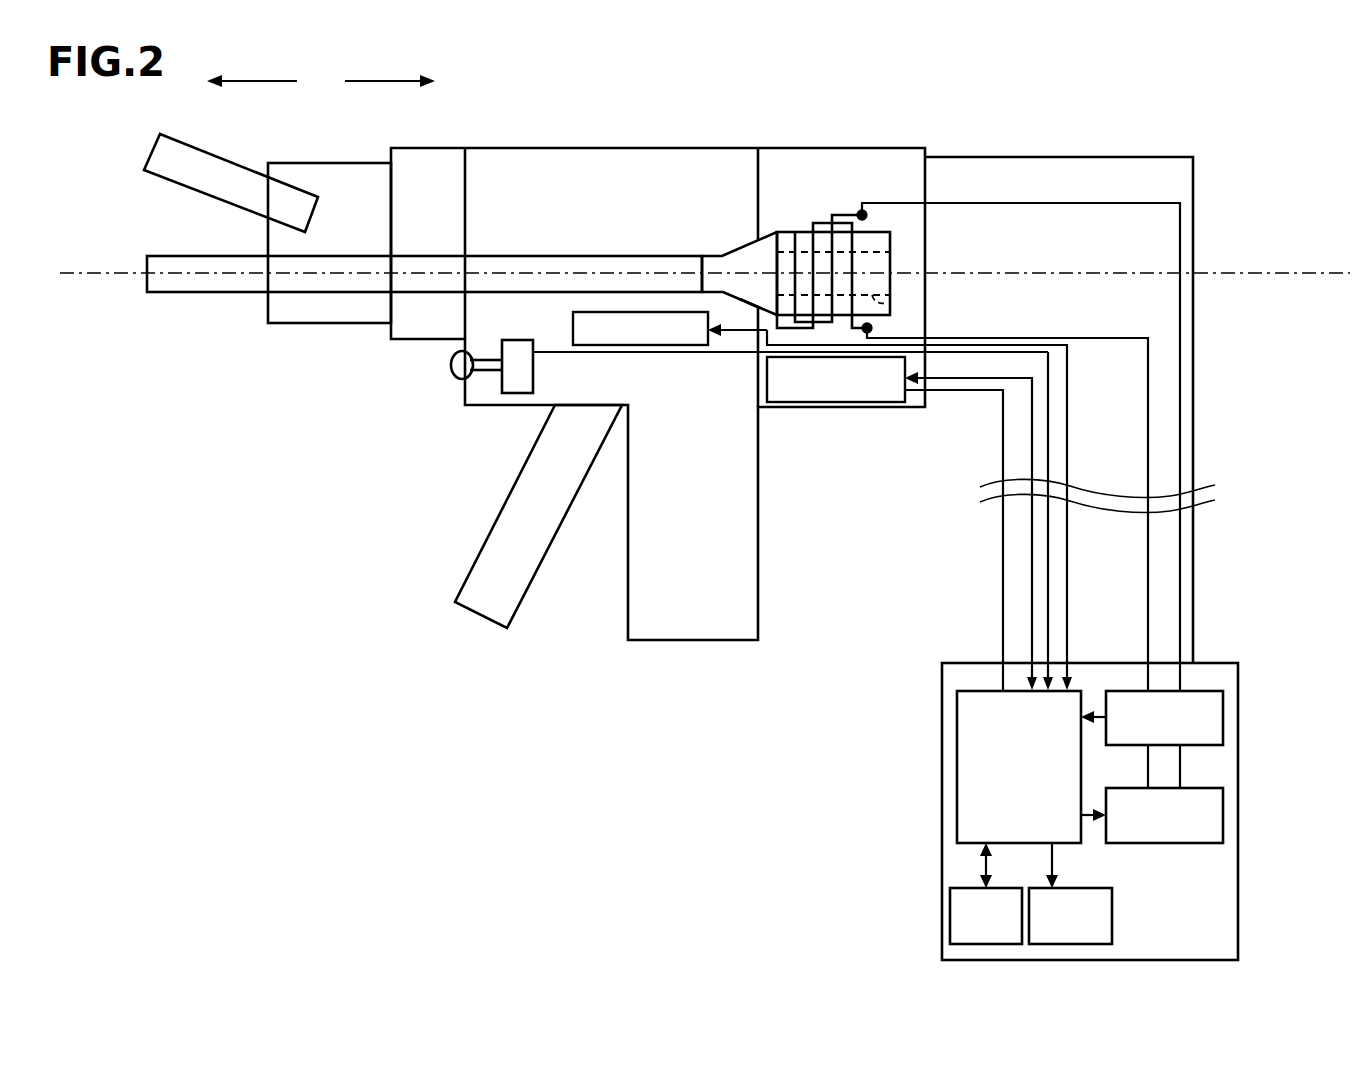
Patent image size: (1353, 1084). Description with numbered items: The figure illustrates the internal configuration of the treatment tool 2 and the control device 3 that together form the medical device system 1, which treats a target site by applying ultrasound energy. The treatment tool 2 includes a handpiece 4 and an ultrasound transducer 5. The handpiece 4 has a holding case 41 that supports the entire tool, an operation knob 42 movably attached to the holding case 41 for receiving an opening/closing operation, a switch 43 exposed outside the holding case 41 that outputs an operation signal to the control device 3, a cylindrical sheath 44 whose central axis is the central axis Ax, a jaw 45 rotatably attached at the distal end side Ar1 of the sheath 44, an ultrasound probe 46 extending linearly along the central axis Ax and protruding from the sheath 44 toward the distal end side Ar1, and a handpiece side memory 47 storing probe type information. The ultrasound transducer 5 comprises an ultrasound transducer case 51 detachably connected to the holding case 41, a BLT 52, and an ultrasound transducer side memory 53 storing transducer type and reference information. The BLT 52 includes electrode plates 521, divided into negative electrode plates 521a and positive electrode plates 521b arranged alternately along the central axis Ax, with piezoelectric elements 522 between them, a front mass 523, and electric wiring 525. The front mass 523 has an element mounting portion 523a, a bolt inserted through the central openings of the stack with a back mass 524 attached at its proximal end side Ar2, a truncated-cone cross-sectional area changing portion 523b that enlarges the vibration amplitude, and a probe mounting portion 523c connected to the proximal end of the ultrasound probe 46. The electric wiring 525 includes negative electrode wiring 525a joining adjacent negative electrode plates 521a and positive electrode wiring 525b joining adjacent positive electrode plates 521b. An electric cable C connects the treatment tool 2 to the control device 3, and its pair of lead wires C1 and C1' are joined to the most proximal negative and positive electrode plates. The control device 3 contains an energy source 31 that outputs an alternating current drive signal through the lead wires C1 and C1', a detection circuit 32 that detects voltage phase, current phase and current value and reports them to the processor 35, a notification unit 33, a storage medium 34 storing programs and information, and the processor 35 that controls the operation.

The medical device system 1 is at (1198, 88).
The treatment tool 2 is at (642, 104).
The control device 3 is at (1238, 680).
The handpiece 4 is at (644, 163).
The ultrasound transducer 5 is at (778, 163).
The energy source 31 is at (1223, 812).
The detection circuit 32 is at (1223, 718).
The notification unit 33 is at (1112, 912).
The storage medium 34 is at (950, 908).
The processor 35 is at (942, 720).
The holding case 41 is at (515, 152).
The operation knob 42 is at (498, 545).
The switch 43 is at (452, 372).
The sheath 44 is at (341, 175).
The jaw 45 is at (203, 160).
The ultrasound probe 46 is at (206, 293).
The handpiece side memory 47 is at (573, 330).
The ultrasound transducer case 51 is at (932, 150).
The BLT 52 is at (911, 433).
The ultrasound transducer side memory 53 is at (845, 403).
The electrode plates 521 is at (849, 203).
The negative electrode plates 521a is at (756, 241).
The positive electrode plates 521b is at (810, 163).
The piezoelectric elements 522 is at (785, 232).
The front mass 523 is at (738, 260).
The element mounting portion 523a is at (888, 303).
The cross-sectional area changing portion 523b is at (752, 300).
The probe mounting portion 523c is at (710, 262).
The back mass 524 is at (882, 265).
The electric wiring 525 is at (941, 457).
The negative electrode wiring 525a is at (852, 226).
The positive electrode wiring 525b is at (880, 333).
The electric cable C is at (1136, 157).
The lead wire C1 is at (1122, 386).
The lead wire C1' is at (1224, 399).
The central axis Ax is at (1320, 270).
The distal end side Ar1 is at (249, 79).
The proximal end side Ar2 is at (383, 79).